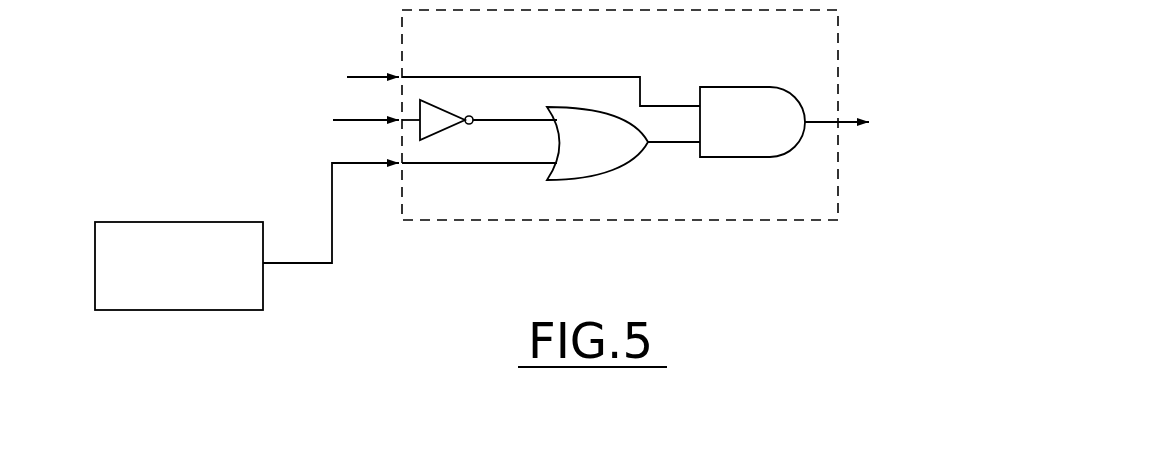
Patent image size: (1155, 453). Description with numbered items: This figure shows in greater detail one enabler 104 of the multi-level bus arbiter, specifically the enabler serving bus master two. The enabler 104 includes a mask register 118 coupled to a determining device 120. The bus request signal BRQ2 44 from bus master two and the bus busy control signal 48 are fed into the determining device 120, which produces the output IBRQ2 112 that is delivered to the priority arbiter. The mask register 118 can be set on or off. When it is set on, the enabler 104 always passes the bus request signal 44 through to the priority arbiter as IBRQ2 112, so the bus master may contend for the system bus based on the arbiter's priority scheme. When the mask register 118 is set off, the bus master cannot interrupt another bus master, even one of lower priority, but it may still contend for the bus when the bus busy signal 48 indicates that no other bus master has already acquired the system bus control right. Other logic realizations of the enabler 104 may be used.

The bus request signal BRQ2 44 is at (361, 77).
The bus busy control signal 48 is at (350, 123).
The enabler 104 is at (668, 162).
The IBRQ2 112 is at (847, 118).
The mask register 118 is at (195, 311).
The determining device 120 is at (840, 56).